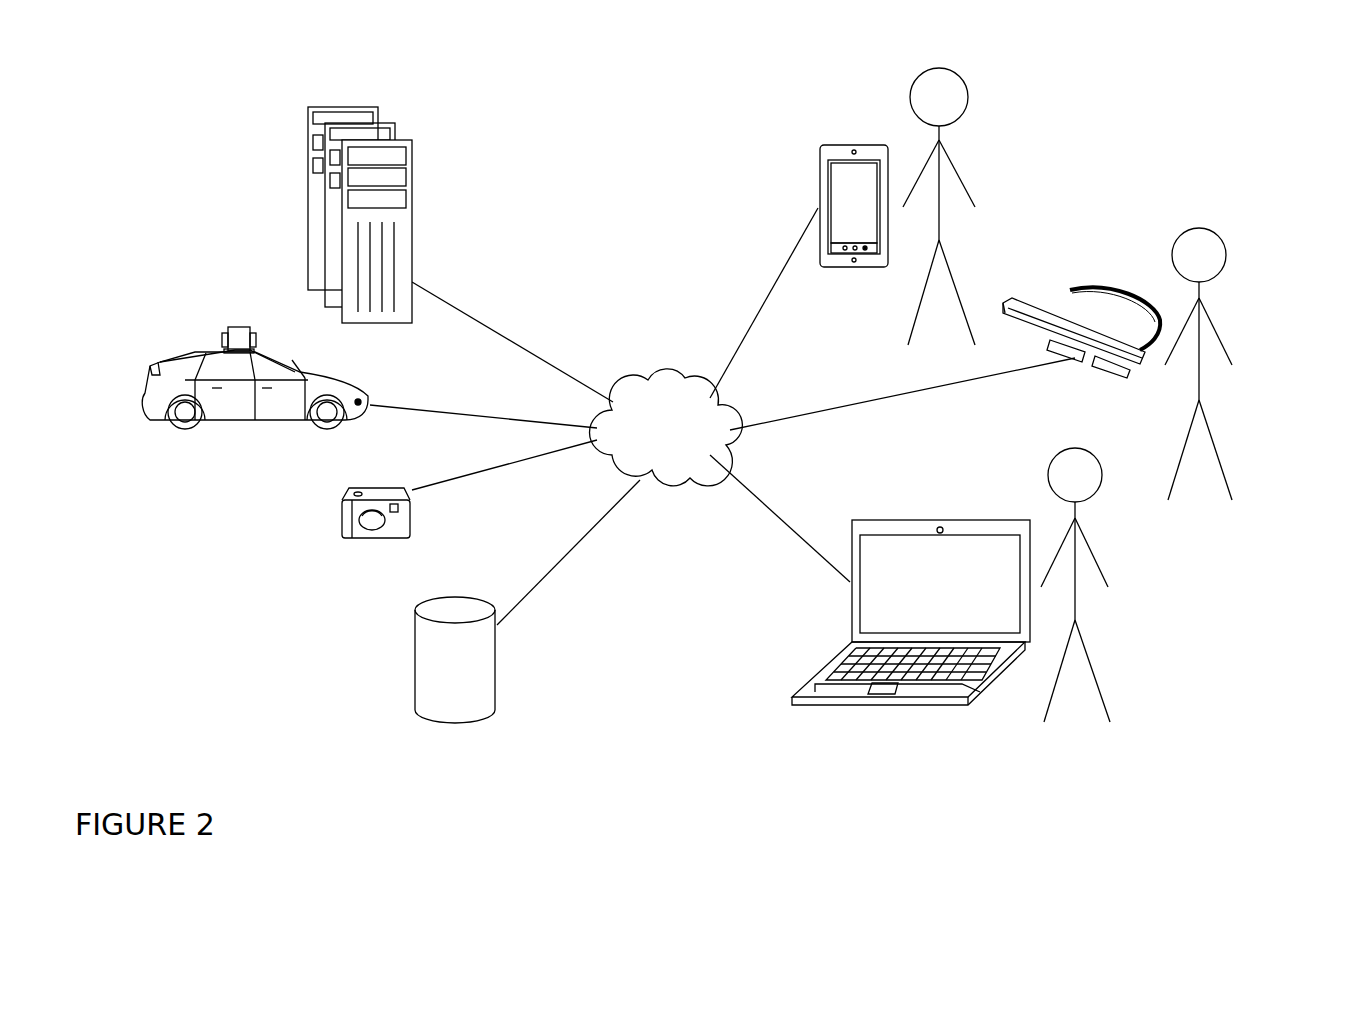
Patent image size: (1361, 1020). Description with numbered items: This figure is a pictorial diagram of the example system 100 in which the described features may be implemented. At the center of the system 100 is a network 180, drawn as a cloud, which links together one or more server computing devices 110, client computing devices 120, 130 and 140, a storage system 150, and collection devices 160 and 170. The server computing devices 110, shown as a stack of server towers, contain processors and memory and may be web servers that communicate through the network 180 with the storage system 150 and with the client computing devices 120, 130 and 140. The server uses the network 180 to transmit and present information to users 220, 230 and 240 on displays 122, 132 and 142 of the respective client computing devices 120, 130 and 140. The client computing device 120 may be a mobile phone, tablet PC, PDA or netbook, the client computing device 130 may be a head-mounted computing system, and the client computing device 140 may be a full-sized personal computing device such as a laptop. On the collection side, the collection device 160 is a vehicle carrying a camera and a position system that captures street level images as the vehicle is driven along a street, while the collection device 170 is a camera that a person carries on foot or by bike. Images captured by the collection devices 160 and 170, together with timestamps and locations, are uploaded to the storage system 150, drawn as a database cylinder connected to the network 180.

The system 100 is at (699, 425).
The server computing device 110 is at (412, 183).
The client computing device 120 is at (800, 206).
The display 122 is at (820, 205).
The client computing device 130 is at (1081, 324).
The display 132 is at (1115, 372).
The client computing device 140 is at (887, 612).
The display 142 is at (850, 625).
The storage system 150 is at (497, 680).
The collection device 160 is at (213, 318).
The collection device 170 is at (340, 515).
The network 180 is at (666, 427).
The user 220 is at (978, 200).
The user 230 is at (1235, 352).
The user 240 is at (1112, 577).